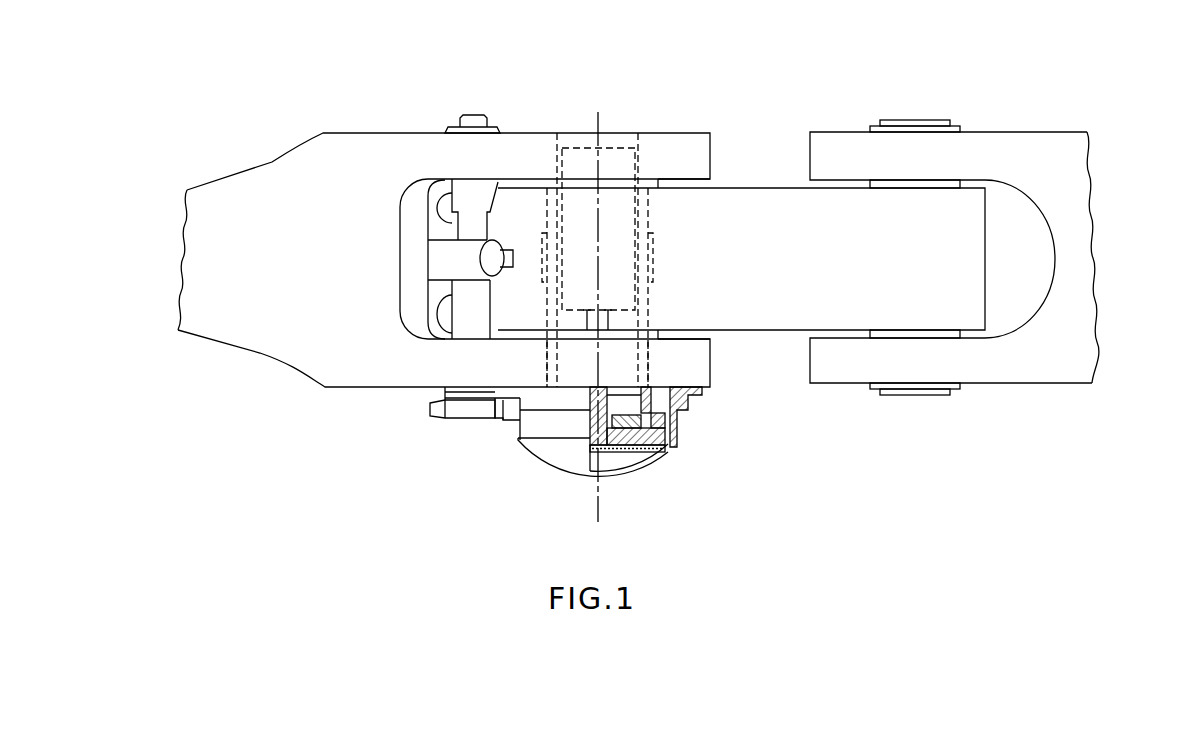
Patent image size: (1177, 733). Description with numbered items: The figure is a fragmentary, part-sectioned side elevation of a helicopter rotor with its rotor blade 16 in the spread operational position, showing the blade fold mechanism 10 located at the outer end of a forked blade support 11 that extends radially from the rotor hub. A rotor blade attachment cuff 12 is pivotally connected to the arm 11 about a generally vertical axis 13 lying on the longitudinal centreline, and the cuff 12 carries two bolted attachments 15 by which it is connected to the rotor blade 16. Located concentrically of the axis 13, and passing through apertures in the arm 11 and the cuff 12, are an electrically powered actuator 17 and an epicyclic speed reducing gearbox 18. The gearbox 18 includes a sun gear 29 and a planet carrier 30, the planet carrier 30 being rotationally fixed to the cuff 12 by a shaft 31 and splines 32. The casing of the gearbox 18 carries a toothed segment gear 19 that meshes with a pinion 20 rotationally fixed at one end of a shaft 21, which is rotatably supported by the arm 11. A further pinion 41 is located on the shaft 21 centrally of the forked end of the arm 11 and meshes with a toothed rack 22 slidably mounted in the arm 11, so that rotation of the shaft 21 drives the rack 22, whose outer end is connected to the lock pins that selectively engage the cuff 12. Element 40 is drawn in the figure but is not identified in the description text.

The blade fold mechanism 10 is at (747, 96).
The forked blade support 11 is at (262, 197).
The rotor blade attachment cuff 12 is at (767, 205).
The vertical axis 13 is at (598, 512).
The bolted attachments 15 is at (940, 393).
The rotor blade 16 is at (1077, 370).
The electrically powered actuator 17 is at (620, 218).
The epicyclic speed reducing gearbox 18 is at (673, 420).
The toothed segment gear 19 is at (518, 420).
The pinion 20 is at (447, 405).
The shaft 21 is at (458, 235).
The toothed rack 22 is at (437, 263).
The sun gear 29 is at (595, 442).
The planet carrier 30 is at (677, 452).
The shaft 31 is at (643, 362).
The splines 32 is at (653, 263).
The seal 40 is at (640, 435).
The further pinion 41 is at (504, 250).